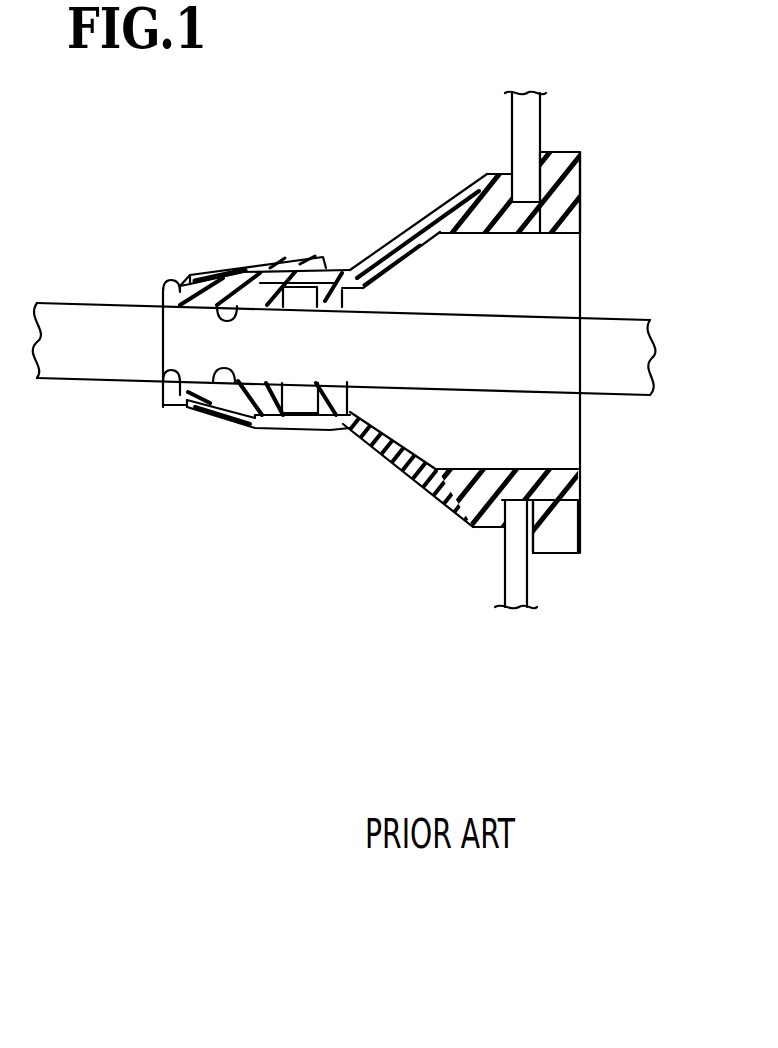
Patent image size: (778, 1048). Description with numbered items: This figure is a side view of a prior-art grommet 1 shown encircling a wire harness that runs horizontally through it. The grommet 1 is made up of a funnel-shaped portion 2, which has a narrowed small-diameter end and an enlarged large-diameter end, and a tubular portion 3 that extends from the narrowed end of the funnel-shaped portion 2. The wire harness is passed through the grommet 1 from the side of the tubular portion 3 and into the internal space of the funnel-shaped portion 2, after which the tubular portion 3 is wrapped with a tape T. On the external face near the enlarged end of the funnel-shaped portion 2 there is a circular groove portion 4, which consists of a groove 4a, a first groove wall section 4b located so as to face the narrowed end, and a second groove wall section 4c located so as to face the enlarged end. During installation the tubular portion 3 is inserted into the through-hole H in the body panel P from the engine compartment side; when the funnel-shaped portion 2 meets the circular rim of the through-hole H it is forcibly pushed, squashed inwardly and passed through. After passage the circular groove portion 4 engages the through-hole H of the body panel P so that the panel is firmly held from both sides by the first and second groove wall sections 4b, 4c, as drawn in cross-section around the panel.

The grommet 1 is at (367, 378).
The funnel-shaped portion 2 is at (403, 228).
The tubular portion 3 is at (260, 424).
The circular groove portion 4 is at (514, 302).
The groove 4a is at (568, 470).
The first groove wall section 4b is at (492, 174).
The second groove wall section 4c is at (572, 158).
The tape T is at (252, 258).
The through-hole H is at (580, 507).
The body panel P is at (505, 578).